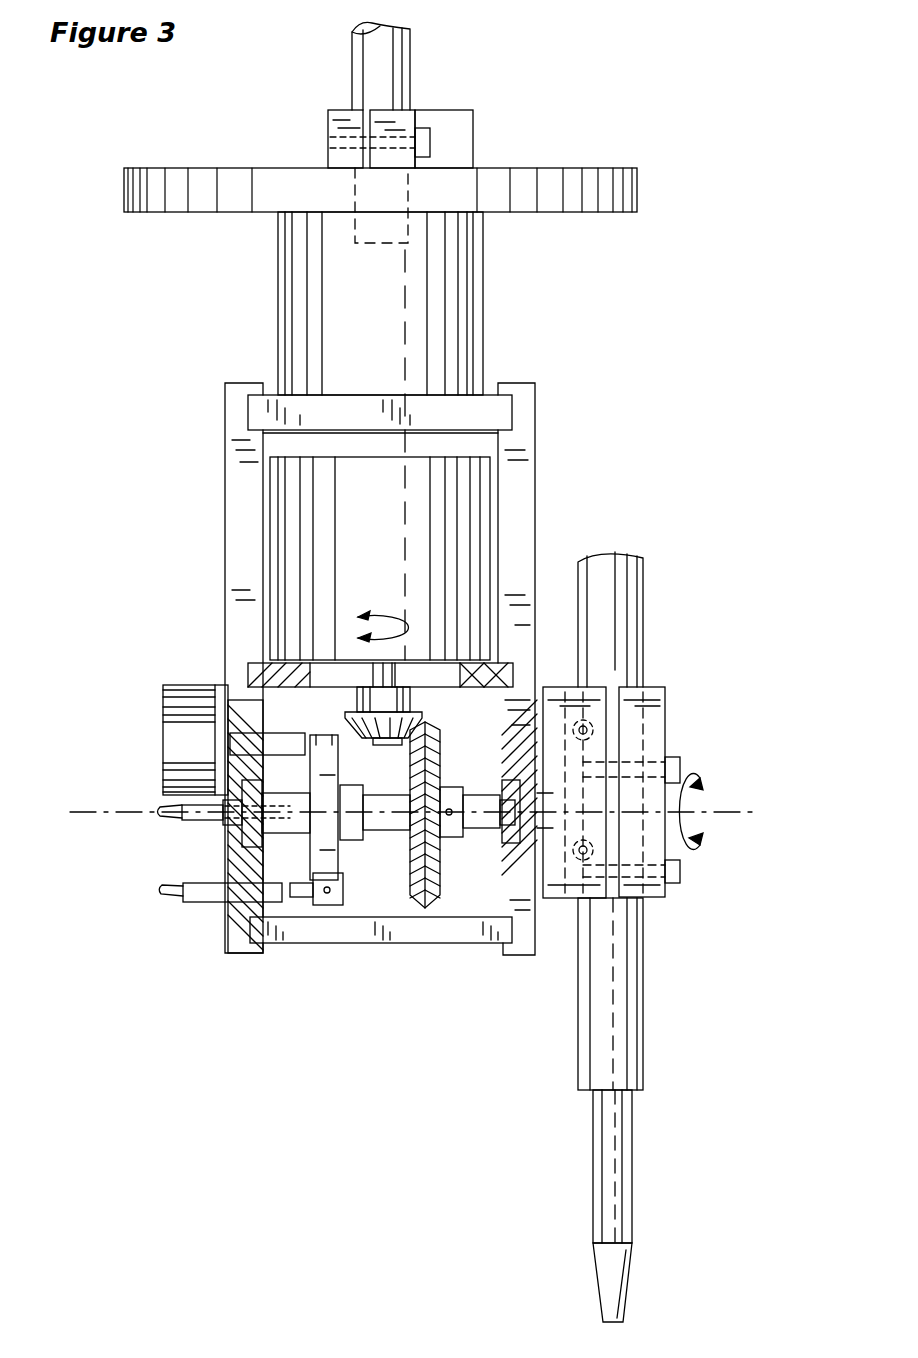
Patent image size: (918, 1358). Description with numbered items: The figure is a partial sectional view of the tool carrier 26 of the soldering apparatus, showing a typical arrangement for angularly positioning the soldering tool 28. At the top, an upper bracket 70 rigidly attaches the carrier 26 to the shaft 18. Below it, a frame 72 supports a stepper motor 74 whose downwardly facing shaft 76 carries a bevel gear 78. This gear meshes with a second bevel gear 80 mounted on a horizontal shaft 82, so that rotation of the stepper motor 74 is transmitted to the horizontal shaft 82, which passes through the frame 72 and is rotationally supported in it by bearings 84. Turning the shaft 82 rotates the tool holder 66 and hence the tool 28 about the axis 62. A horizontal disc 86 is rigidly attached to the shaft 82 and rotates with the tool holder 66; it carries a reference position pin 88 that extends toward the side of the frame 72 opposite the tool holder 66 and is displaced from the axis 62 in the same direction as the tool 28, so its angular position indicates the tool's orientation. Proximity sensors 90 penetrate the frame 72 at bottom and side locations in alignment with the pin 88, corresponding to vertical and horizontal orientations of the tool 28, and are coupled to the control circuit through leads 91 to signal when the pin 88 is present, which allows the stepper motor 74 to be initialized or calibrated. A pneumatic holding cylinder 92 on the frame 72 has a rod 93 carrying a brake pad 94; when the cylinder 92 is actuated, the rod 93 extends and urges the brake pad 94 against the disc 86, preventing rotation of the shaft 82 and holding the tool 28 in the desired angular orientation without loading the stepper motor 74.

The shaft 18 is at (410, 76).
The upper bracket 70 is at (457, 146).
The frame 72 is at (535, 425).
The stepper motor 74 is at (473, 498).
The tool carrier 26 is at (528, 530).
The downwardly facing shaft 76 is at (375, 672).
The bevel gear 78 is at (427, 718).
The second bevel gear 80 is at (440, 745).
The horizontal shaft 82 is at (477, 827).
The bearings 84 is at (245, 905).
The horizontal disc 86 is at (348, 895).
The reference position pin 88 is at (294, 905).
The proximity sensors 90 is at (190, 823).
The leads 91 is at (173, 808).
The pneumatic holding cylinder 92 is at (187, 698).
The rod 93 is at (233, 742).
The brake pad 94 is at (203, 760).
The tool holder 66 is at (665, 895).
The tool 28 is at (628, 1030).
The axis 62 is at (742, 808).